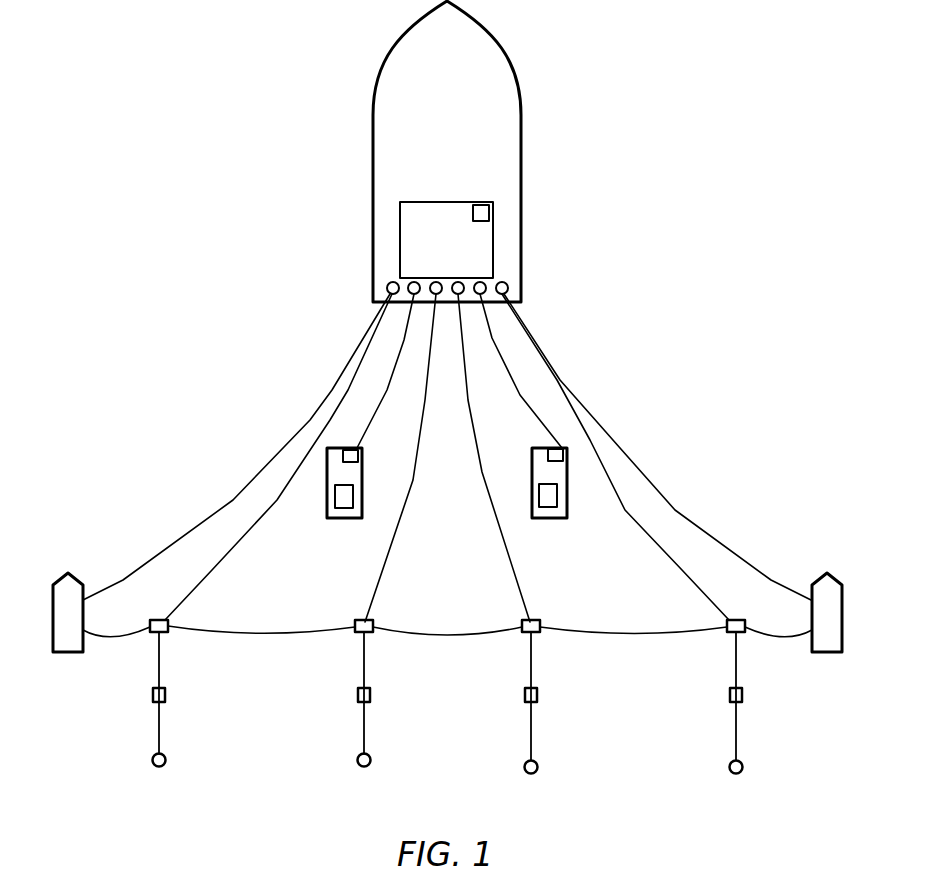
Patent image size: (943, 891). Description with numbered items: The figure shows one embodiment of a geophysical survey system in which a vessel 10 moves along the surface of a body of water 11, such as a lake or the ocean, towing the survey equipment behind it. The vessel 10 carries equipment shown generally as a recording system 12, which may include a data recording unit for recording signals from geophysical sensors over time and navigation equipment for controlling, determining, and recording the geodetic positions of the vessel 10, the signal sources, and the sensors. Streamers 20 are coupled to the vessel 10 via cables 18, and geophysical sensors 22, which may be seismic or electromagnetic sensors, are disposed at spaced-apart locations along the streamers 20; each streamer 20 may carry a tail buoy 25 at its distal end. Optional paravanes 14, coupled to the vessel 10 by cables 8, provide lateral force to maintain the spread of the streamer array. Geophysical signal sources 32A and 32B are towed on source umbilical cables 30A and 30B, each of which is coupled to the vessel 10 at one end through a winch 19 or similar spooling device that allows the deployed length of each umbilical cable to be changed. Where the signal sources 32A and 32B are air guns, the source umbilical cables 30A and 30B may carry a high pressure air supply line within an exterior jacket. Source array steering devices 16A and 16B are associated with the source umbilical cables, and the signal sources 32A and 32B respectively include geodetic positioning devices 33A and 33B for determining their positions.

The cables 8 is at (322, 402).
The vessel 10 is at (462, 127).
The body of water 11 is at (218, 120).
The recording system 12 is at (445, 202).
The paravanes 14 is at (70, 652).
The source array steering device 16A is at (292, 496).
The source array steering device 16B is at (597, 494).
The cables 18 is at (482, 472).
The winch 19 is at (383, 287).
The streamers 20 is at (447, 697).
The geophysical sensors 22 is at (371, 695).
The tail buoys 25 is at (371, 760).
The source umbilical cable 30A is at (400, 352).
The source umbilical cable 30B is at (492, 338).
The geophysical signal source 32A is at (325, 500).
The geophysical signal source 32B is at (568, 502).
The geodetic positioning device 33A is at (343, 498).
The geodetic positioning device 33B is at (547, 507).